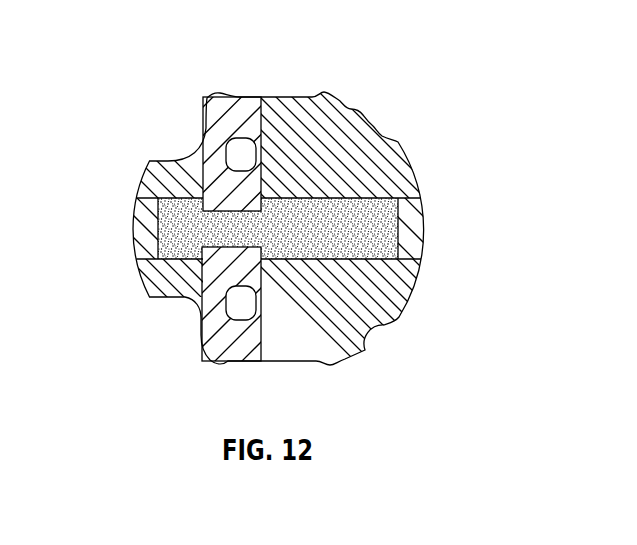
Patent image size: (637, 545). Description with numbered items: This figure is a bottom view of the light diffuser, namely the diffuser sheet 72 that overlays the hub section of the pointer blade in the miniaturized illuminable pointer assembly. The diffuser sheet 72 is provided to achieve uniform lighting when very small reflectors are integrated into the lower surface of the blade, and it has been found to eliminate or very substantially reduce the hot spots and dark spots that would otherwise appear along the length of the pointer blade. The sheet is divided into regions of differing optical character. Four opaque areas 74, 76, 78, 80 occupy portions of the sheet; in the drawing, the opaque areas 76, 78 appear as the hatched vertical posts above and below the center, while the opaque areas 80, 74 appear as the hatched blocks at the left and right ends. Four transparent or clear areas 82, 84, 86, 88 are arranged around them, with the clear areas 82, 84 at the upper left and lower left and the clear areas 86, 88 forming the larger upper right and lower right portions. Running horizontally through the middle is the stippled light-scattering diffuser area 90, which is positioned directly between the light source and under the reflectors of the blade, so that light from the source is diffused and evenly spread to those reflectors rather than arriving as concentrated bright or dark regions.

The diffuser sheet 72 is at (400, 146).
The opaque area 74 is at (403, 225).
The opaque area 76 is at (222, 107).
The opaque area 78 is at (235, 347).
The opaque area 80 is at (132, 226).
The transparent area 82 is at (152, 183).
The transparent area 84 is at (153, 277).
The transparent area 86 is at (340, 108).
The transparent area 88 is at (358, 340).
The light-scattering diffuser area 90 is at (362, 210).